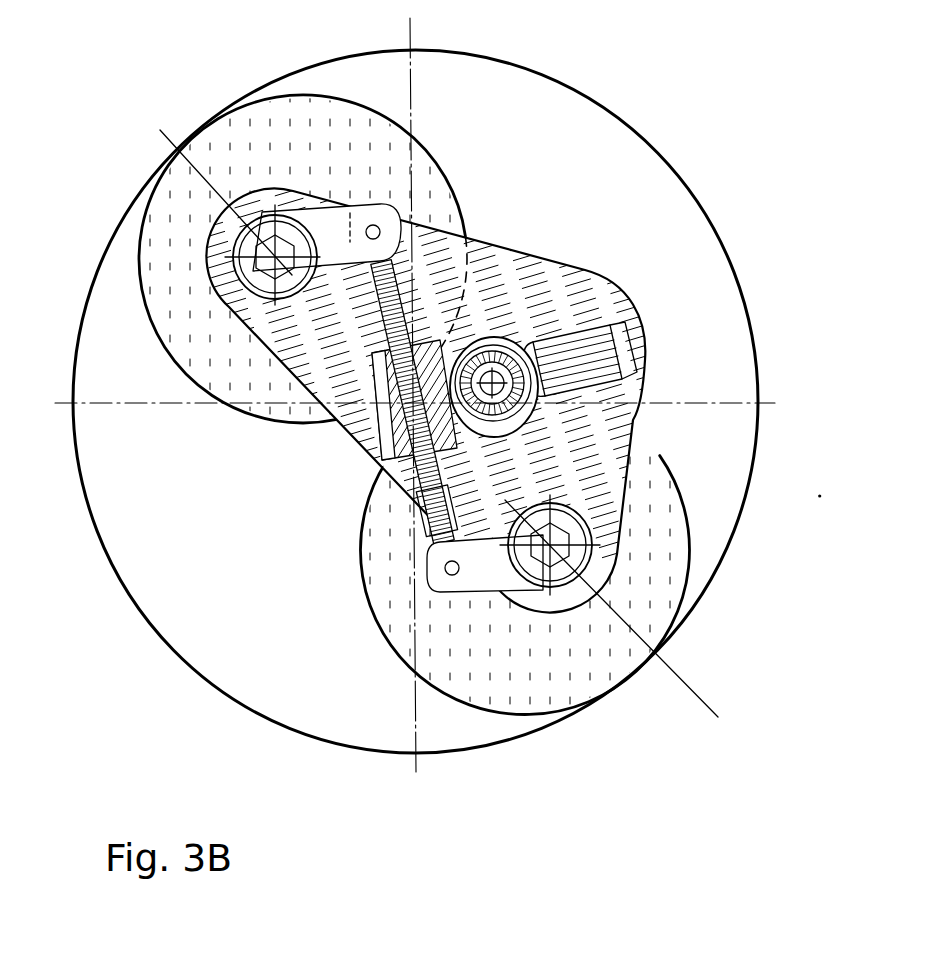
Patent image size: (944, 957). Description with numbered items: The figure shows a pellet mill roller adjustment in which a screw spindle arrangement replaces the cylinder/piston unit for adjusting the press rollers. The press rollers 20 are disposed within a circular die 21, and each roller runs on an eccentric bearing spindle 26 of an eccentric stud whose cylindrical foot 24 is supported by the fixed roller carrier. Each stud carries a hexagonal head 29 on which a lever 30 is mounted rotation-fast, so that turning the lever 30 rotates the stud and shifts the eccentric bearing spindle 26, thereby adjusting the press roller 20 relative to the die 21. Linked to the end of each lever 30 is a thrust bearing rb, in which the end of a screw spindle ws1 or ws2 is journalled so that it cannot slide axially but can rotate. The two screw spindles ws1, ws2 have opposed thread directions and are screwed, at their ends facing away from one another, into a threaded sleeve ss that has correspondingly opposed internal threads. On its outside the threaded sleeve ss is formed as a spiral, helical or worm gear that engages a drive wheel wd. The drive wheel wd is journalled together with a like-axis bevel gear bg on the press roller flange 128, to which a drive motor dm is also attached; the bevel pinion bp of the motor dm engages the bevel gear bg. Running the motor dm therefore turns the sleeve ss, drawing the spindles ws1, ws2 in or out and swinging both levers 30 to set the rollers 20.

The circular die 21 is at (556, 96).
The press rollers 20 is at (273, 424).
The press roller flange 128 is at (510, 267).
The cylindrical feet 24 is at (243, 296).
The eccentric bearing spindles 26 is at (305, 213).
The hexagonal head 29 is at (572, 526).
The lever 30 is at (338, 220).
The thrust bearing rb is at (400, 206).
The threaded sleeve ss is at (398, 468).
The screw spindle ws1 is at (377, 303).
The screw spindle ws2 is at (428, 516).
The drive wheel wd is at (482, 340).
The bevel gear bg is at (500, 420).
The bevel pinion bp is at (520, 410).
The drive motor dm is at (570, 330).